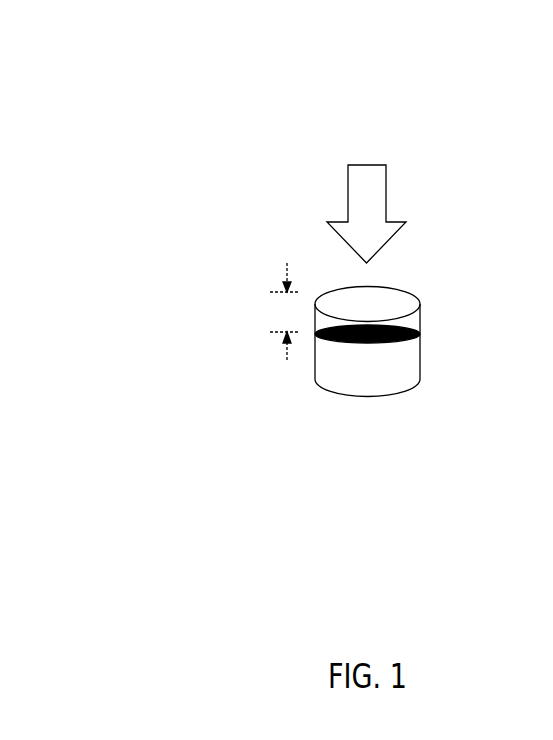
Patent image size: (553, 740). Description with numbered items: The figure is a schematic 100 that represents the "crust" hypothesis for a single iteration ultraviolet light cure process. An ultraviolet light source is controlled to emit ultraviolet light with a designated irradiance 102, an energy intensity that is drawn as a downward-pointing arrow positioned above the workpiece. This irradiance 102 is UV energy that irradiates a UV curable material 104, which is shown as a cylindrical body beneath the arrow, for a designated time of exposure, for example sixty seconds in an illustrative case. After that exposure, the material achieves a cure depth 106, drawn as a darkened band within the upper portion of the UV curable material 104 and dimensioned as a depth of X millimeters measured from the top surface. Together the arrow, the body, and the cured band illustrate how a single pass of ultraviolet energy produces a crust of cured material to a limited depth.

The schematic 100 is at (112, 85).
The irradiance 102 is at (380, 190).
The UV curable material 104 is at (348, 397).
The cure depth 106 is at (420, 332).